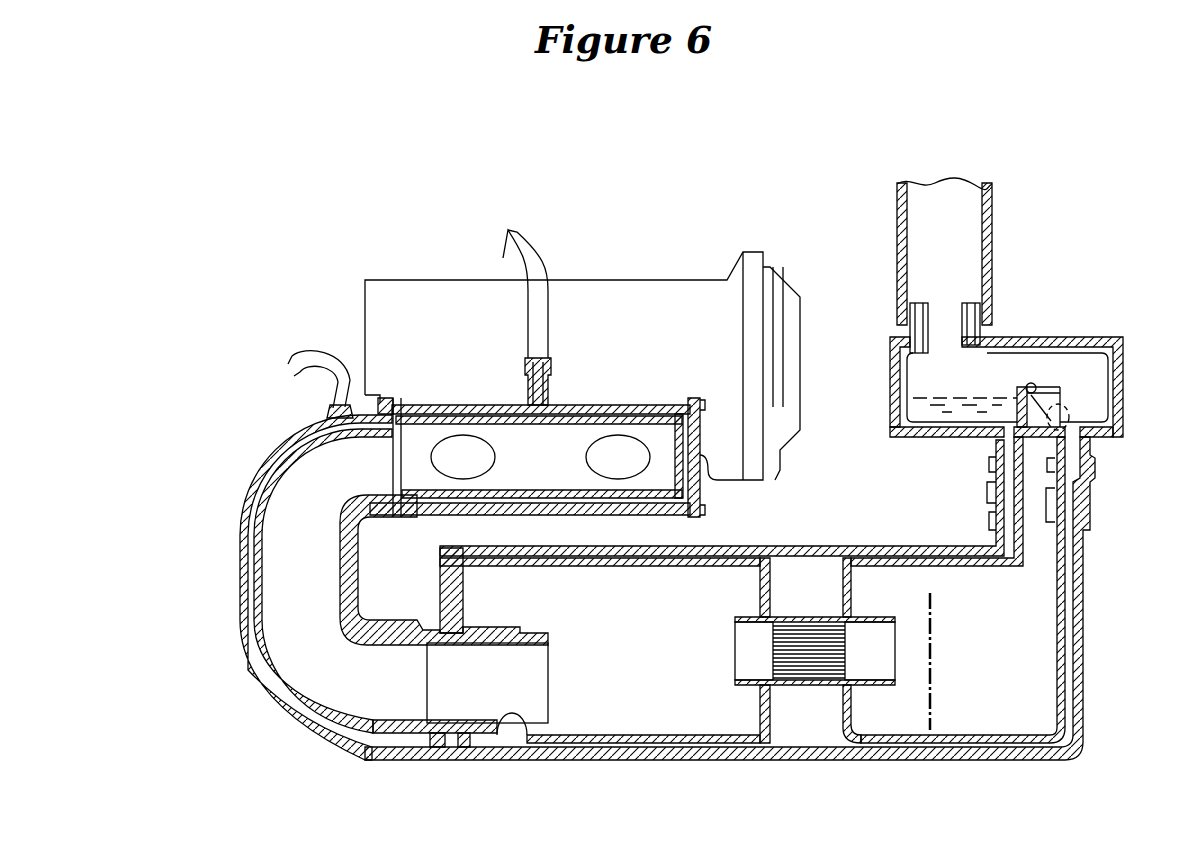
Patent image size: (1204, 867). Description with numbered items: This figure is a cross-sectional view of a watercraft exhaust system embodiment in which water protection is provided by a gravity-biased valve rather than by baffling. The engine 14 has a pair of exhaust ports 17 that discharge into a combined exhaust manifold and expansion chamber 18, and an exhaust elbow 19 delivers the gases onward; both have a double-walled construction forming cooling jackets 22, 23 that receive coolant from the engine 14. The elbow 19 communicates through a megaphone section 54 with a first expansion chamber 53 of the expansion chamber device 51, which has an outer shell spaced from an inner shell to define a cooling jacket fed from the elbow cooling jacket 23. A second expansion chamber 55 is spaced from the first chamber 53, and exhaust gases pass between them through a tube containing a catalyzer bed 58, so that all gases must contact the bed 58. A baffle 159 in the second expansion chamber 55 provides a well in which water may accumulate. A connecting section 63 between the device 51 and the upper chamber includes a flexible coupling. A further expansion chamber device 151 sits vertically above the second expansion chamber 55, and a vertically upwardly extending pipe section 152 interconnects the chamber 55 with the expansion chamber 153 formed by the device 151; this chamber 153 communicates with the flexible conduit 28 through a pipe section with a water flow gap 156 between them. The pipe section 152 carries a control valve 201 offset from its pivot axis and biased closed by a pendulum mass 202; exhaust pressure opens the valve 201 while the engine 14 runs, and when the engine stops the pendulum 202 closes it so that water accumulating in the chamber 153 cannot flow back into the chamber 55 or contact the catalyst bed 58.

The engine 14 is at (598, 282).
The cooling jacket 22 is at (563, 405).
The exhaust manifold 18 is at (616, 400).
The exhaust ports 17 is at (607, 442).
The exhaust elbow 19 is at (287, 447).
The cooling jacket 23 is at (262, 522).
The first expansion chamber 53 is at (624, 636).
The catalyzer bed 58 is at (773, 653).
The megaphone section 54 is at (523, 732).
The expansion chamber device 51 is at (704, 762).
The second expansion chamber 55 is at (996, 600).
The baffle 159 is at (932, 680).
The discharge portion 63 is at (1100, 478).
The flexible conduit 28 is at (992, 219).
The further expansion chamber device 151 is at (1005, 330).
The water flow gap 156 is at (910, 333).
The expansion chamber 153 is at (1000, 388).
The control valve 201 is at (1034, 383).
The pipe section 152 is at (1053, 389).
The pendulum mass 202 is at (1070, 398).